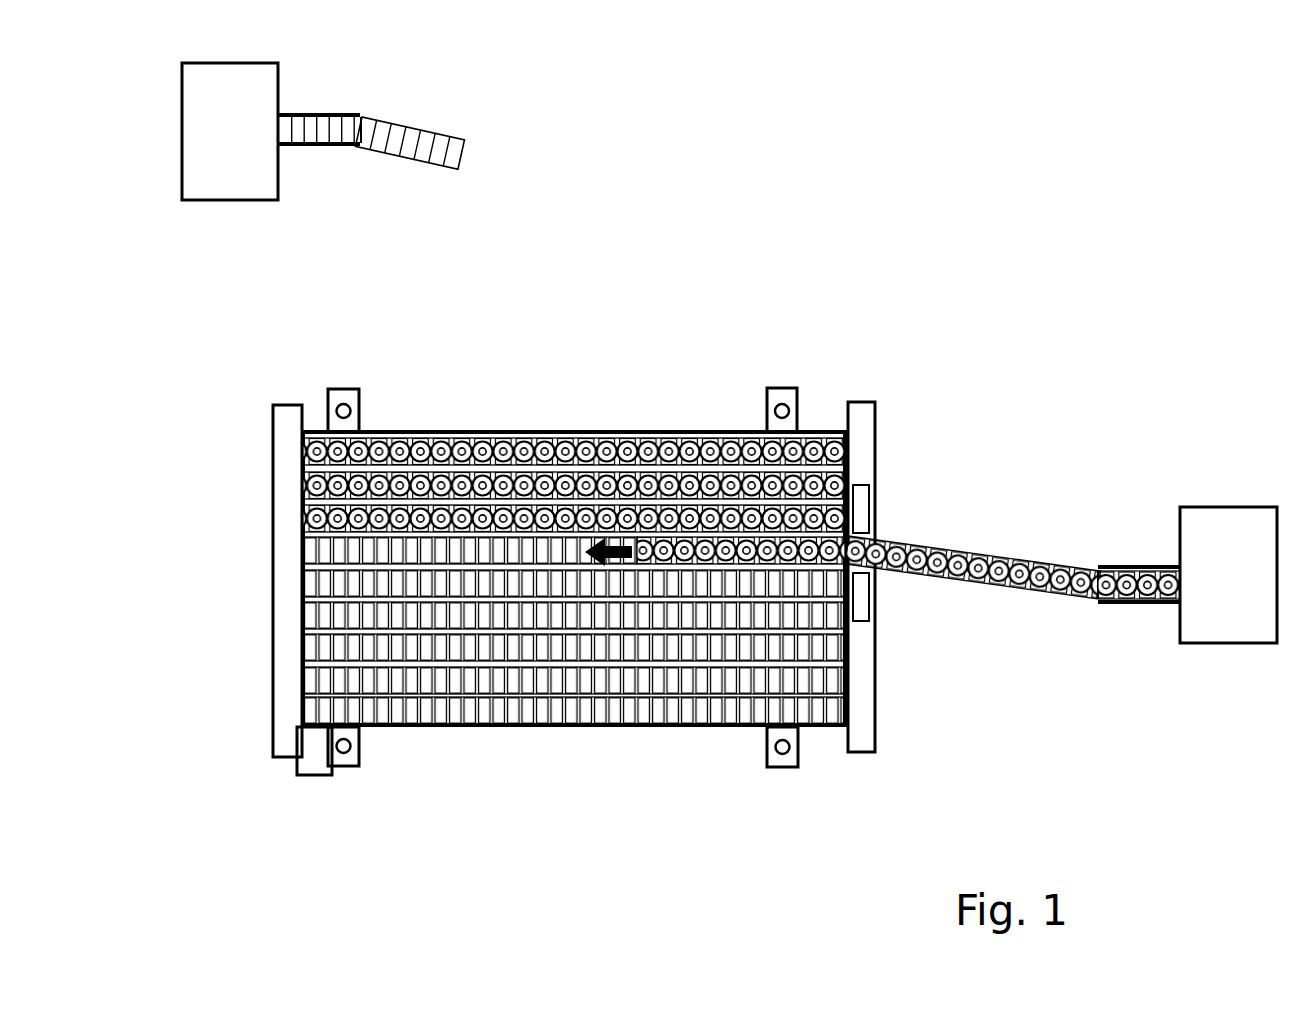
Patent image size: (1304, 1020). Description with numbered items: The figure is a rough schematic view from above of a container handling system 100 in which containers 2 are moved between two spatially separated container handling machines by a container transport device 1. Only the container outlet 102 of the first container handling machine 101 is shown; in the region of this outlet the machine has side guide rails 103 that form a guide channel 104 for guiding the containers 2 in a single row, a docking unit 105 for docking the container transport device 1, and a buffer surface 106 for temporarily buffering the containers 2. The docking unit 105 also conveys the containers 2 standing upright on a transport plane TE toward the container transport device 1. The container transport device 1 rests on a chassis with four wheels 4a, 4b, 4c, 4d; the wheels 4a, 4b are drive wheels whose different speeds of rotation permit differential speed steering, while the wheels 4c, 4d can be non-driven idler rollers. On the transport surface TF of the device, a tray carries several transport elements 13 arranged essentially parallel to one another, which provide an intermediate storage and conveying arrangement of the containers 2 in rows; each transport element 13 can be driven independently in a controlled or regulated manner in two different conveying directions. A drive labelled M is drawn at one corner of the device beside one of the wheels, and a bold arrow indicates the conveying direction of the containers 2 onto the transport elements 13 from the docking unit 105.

The container handling system 100 is at (984, 152).
The container transport device 1 is at (557, 574).
The containers 2 is at (424, 447).
The wheel 4a is at (781, 779).
The wheel 4b is at (781, 378).
The wheel 4c is at (346, 378).
The wheel 4d is at (349, 777).
The transport elements 13 is at (557, 511).
The transport surface TF is at (575, 681).
The transport plane TE is at (428, 138).
The motor M is at (314, 751).
The first container handling machine 101 is at (1208, 595).
The container outlet 102 is at (1142, 588).
The side guide rails 103 is at (1114, 565).
The guide channel 104 is at (1091, 602).
The docking unit 105 is at (929, 538).
The buffer surface 106 is at (1141, 567).